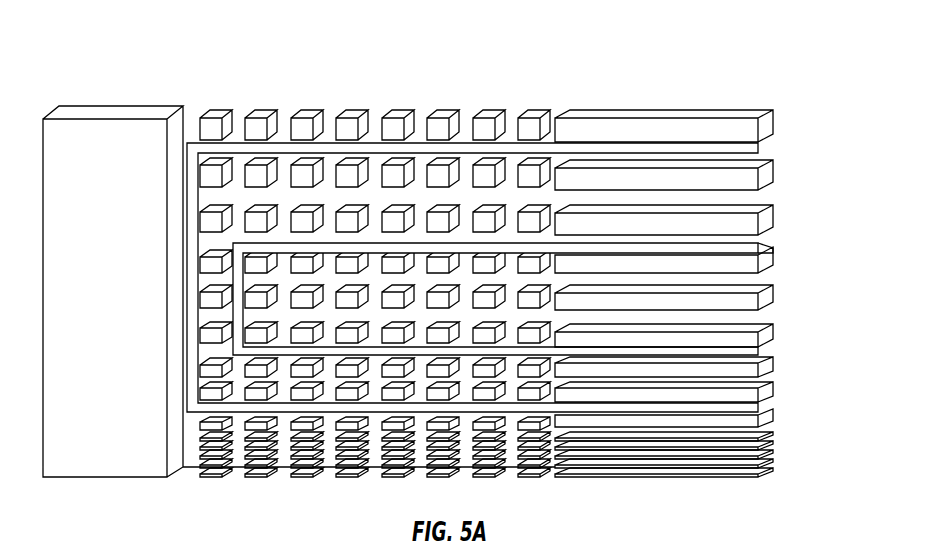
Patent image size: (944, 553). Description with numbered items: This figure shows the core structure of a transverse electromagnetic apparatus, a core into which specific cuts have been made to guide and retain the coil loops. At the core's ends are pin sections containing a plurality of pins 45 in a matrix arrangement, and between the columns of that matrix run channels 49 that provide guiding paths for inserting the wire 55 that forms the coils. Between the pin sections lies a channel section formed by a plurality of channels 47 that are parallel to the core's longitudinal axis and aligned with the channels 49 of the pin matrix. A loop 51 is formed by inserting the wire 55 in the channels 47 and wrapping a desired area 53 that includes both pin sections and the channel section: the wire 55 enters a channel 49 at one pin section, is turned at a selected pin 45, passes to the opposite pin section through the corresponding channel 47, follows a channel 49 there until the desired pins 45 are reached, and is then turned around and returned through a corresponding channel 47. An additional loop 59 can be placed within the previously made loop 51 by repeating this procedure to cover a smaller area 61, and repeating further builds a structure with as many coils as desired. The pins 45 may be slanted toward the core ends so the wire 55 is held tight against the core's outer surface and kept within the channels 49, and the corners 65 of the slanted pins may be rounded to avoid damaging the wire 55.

The pins 45 is at (266, 108).
The corners 65 is at (495, 108).
The loop 51 is at (584, 150).
The desired area 53 is at (640, 176).
The wire 55 is at (732, 133).
The additional loop 59 is at (773, 252).
The smaller area 61 is at (745, 302).
The channels 47 is at (770, 453).
The channels 49 is at (467, 471).